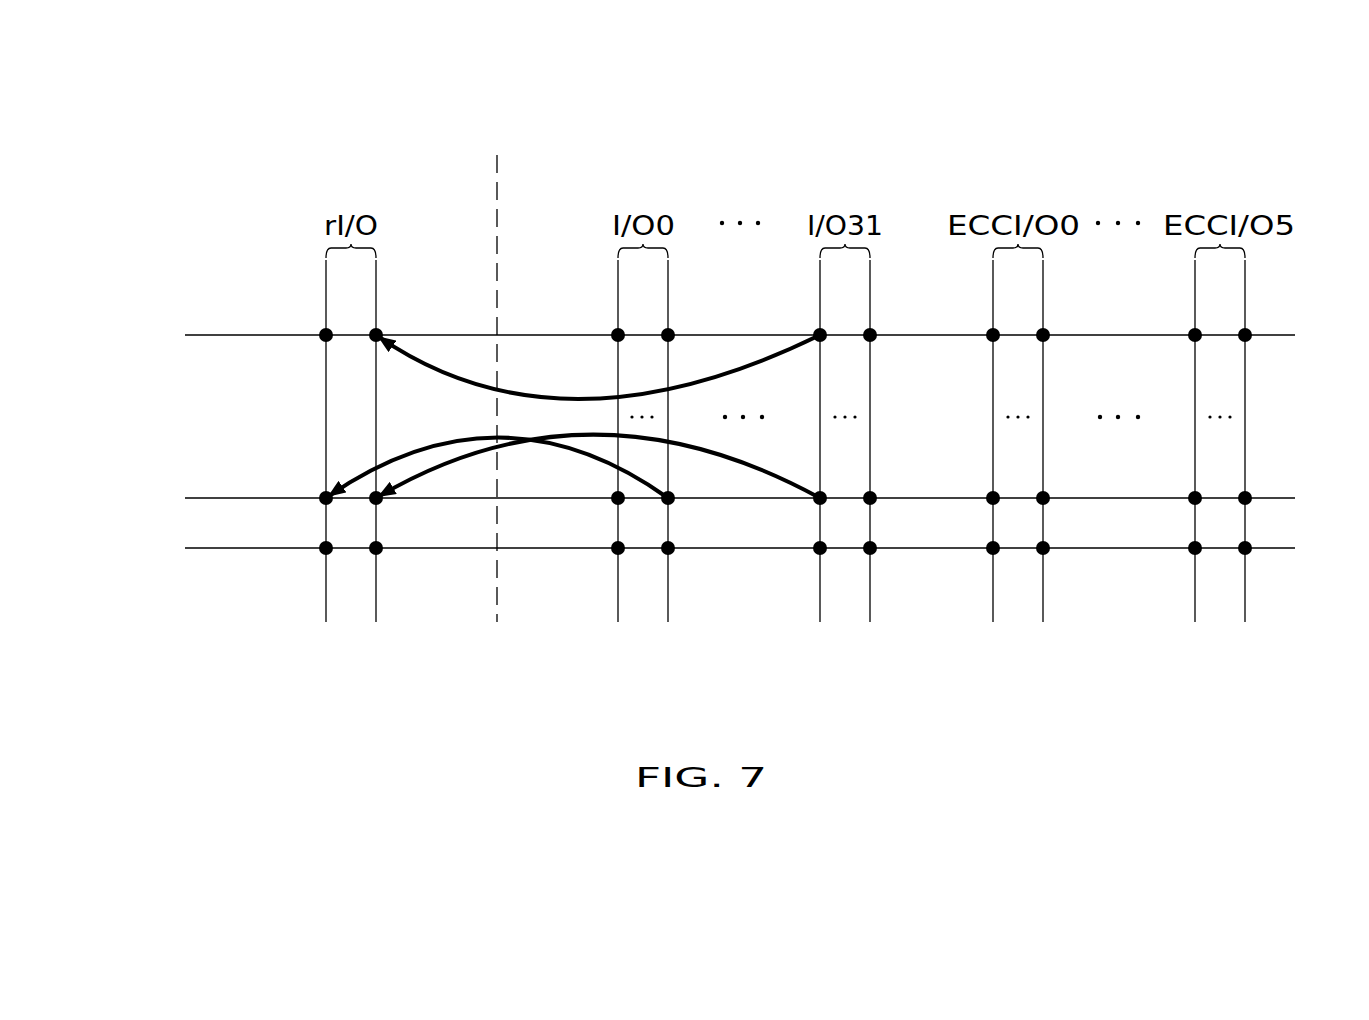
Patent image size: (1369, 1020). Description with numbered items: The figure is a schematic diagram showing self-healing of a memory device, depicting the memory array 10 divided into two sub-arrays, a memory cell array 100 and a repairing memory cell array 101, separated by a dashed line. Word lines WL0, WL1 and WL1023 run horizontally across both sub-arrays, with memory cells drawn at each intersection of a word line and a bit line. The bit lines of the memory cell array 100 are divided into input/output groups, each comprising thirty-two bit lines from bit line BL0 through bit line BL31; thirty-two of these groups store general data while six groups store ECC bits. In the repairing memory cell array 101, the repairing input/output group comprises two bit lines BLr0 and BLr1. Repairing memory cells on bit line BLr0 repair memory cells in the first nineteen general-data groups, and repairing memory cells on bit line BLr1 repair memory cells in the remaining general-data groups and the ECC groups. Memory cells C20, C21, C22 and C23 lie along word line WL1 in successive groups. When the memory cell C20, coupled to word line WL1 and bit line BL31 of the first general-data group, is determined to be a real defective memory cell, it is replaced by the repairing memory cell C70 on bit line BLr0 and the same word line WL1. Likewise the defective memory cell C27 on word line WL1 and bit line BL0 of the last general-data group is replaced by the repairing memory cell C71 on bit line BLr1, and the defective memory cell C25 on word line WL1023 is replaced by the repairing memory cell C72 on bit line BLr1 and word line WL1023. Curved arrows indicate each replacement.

The memory array 10 is at (149, 157).
The memory cell array 100 is at (503, 181).
The repairing memory cell array 101 is at (492, 181).
The word line WL1023 is at (197, 334).
The word line WL1 is at (197, 497).
The word line WL0 is at (197, 547).
The bit line BLr0 is at (325, 277).
The bit line BLr1 is at (377, 312).
The bit line BL0 is at (618, 277).
The bit line BL31 is at (669, 312).
The repairing memory cell C72 is at (378, 342).
The memory cell C25 is at (818, 342).
The repairing memory cell C70 is at (324, 503).
The repairing memory cell C71 is at (379, 502).
The memory cell C20 is at (671, 502).
The memory cell C21 is at (873, 502).
The memory cell C22 is at (1046, 502).
The memory cell C23 is at (1248, 500).
The memory cell C27 is at (817, 502).